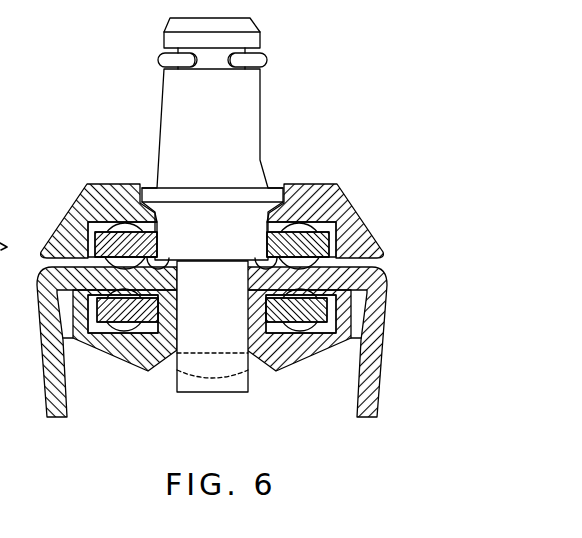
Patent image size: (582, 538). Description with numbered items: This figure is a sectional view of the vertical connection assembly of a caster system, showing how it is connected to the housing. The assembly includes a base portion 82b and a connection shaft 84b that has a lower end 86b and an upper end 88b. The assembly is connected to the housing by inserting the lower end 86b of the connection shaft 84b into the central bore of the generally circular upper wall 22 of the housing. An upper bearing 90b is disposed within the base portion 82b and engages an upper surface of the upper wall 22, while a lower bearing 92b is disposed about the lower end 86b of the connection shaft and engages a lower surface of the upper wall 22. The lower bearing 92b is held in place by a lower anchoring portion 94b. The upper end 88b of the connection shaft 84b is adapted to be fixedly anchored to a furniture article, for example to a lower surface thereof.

The upper end 88b is at (242, 20).
The connection shaft 84b is at (228, 122).
The base portion 82b is at (352, 213).
The upper bearing 90b is at (343, 264).
The upper wall 22 is at (380, 307).
The lower bearing 92b is at (130, 310).
The lower anchoring portion 94b is at (140, 352).
The lower end 86b is at (218, 385).